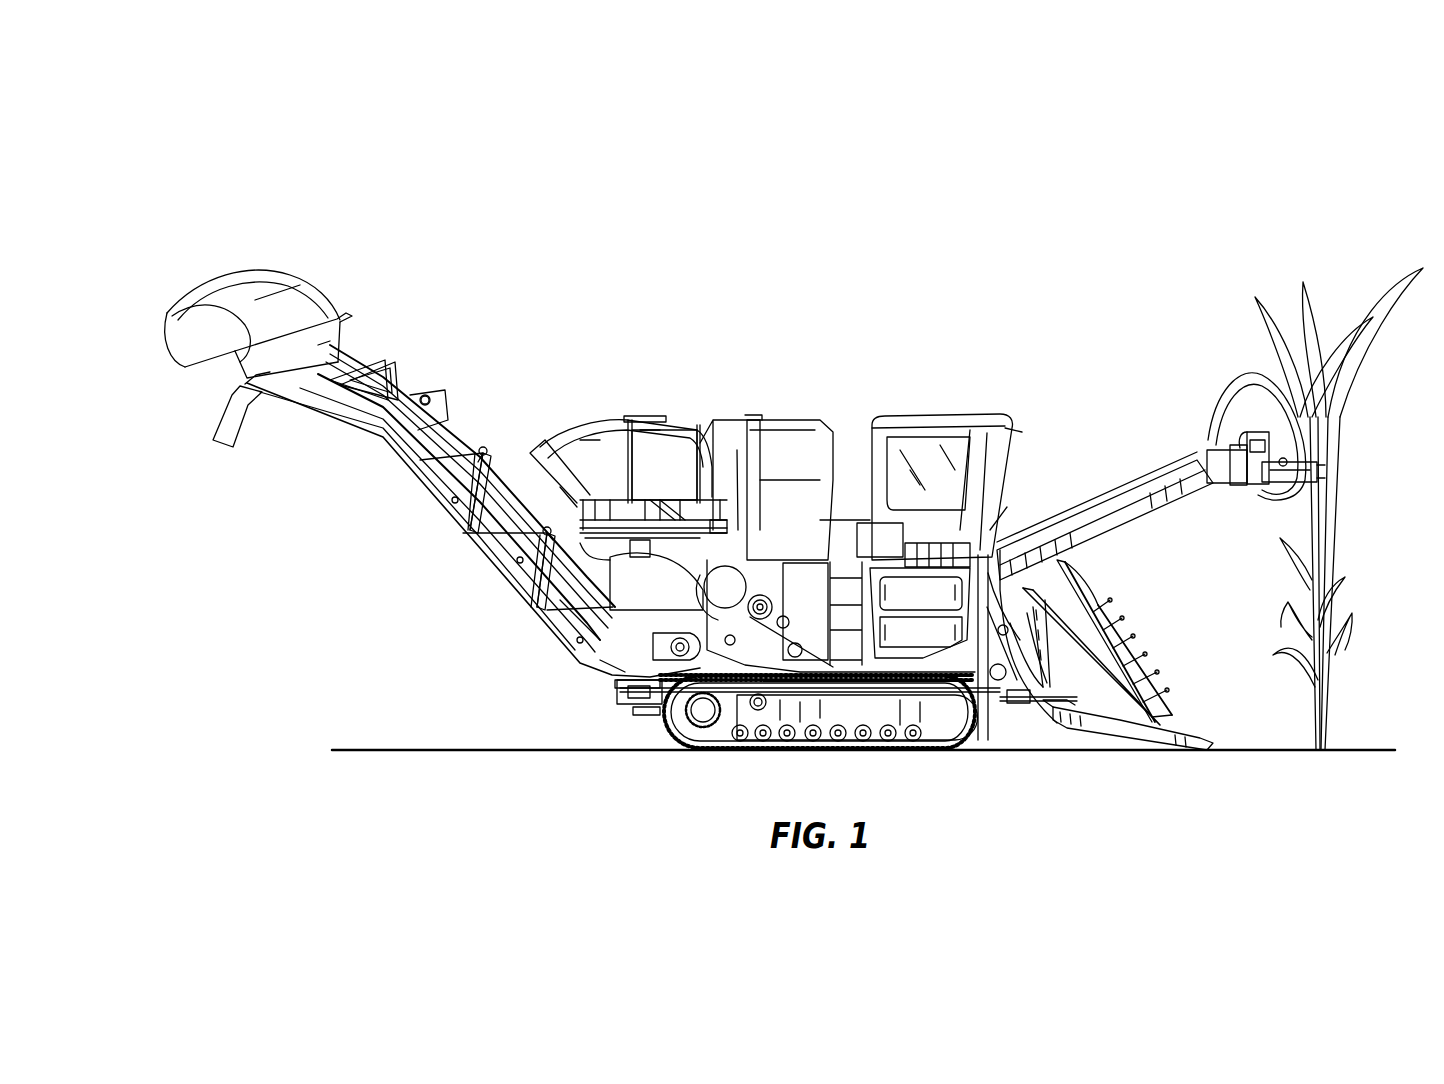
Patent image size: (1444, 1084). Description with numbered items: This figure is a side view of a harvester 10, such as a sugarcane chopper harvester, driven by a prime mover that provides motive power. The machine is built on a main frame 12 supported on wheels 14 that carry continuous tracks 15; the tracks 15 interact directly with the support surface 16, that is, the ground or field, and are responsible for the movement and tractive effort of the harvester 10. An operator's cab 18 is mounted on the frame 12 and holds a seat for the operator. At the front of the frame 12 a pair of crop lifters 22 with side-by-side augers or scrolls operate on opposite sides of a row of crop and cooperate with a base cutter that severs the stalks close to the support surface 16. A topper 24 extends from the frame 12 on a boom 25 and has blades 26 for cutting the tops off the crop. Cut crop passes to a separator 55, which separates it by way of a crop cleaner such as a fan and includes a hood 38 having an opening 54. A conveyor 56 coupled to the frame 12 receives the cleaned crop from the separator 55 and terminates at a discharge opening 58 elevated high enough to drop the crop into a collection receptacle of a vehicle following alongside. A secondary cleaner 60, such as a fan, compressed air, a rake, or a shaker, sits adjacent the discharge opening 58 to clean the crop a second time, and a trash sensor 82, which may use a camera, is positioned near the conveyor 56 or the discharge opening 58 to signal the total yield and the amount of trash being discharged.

The harvester 10 is at (1094, 232).
The main frame 12 is at (980, 623).
The wheels 14 is at (686, 746).
The continuous tracks 15 is at (665, 716).
The support surface 16 is at (430, 746).
The operator's cab 18 is at (963, 420).
The crop lifters 22 is at (1118, 666).
The topper 24 is at (1250, 418).
The boom 25 is at (1118, 494).
The blades 26 is at (1292, 462).
The hood 38 is at (608, 422).
The opening 54 is at (512, 531).
The separator 55 is at (666, 456).
The conveyor 56 is at (447, 503).
The discharge opening 58 is at (216, 376).
The secondary cleaner 60 is at (420, 410).
The trash sensor 82 is at (368, 377).